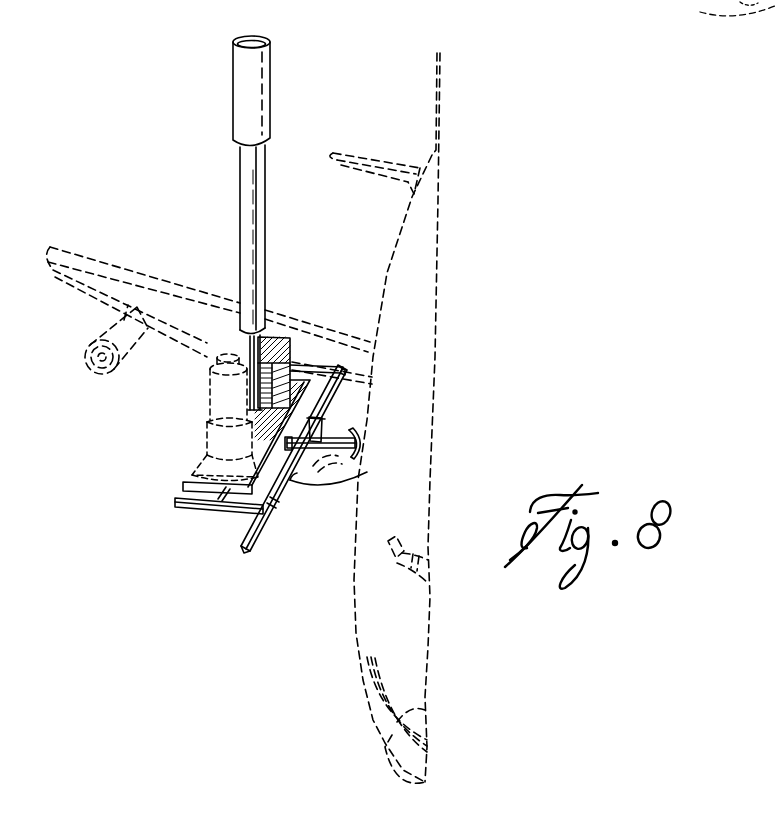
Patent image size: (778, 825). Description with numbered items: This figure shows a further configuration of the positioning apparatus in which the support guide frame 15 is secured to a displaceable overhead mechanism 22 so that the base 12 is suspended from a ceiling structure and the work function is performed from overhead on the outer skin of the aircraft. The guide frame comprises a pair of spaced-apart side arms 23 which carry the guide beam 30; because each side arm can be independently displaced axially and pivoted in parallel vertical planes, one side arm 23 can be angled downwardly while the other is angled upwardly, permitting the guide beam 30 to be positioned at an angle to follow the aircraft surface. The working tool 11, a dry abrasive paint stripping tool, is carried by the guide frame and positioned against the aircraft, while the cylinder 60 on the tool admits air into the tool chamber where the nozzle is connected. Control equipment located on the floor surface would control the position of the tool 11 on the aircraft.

The displaceable overhead mechanism 22 is at (248, 187).
The side arms 23 is at (318, 368).
The displaceable base 12 is at (203, 463).
The guide beam 30 is at (333, 389).
The cylinder 60 is at (357, 428).
The tool 11 is at (367, 440).
The support guide frame 15 is at (367, 472).